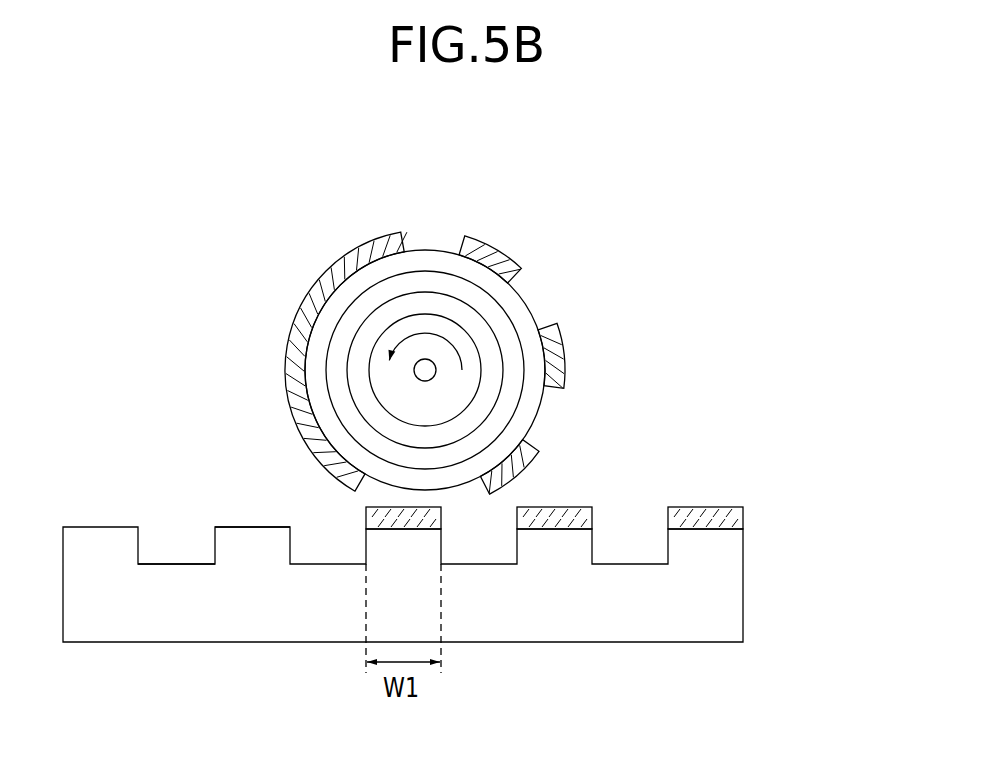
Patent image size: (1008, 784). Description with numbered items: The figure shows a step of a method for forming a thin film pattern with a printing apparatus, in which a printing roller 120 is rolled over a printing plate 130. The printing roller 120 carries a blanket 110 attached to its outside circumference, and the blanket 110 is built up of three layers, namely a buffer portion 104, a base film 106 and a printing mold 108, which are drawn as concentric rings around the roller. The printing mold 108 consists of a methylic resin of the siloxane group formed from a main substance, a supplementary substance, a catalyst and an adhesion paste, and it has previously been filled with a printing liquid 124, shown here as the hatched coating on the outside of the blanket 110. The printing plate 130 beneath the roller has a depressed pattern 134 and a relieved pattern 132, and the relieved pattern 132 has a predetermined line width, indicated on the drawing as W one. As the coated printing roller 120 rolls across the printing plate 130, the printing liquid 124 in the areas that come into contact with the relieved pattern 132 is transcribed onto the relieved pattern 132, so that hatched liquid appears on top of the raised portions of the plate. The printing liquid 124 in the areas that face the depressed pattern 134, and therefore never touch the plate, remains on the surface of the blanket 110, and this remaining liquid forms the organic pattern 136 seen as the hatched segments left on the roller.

The buffer portion 104 is at (495, 349).
The base film 106 is at (518, 369).
The printing mold 108 is at (543, 395).
The blanket 110 is at (508, 370).
The printing roller 120 is at (463, 335).
The printing liquid 124 is at (380, 247).
The printing plate 130 is at (458, 545).
The relieved pattern 132 is at (248, 538).
The depressed pattern 134 is at (178, 540).
The organic pattern 136 is at (485, 247).